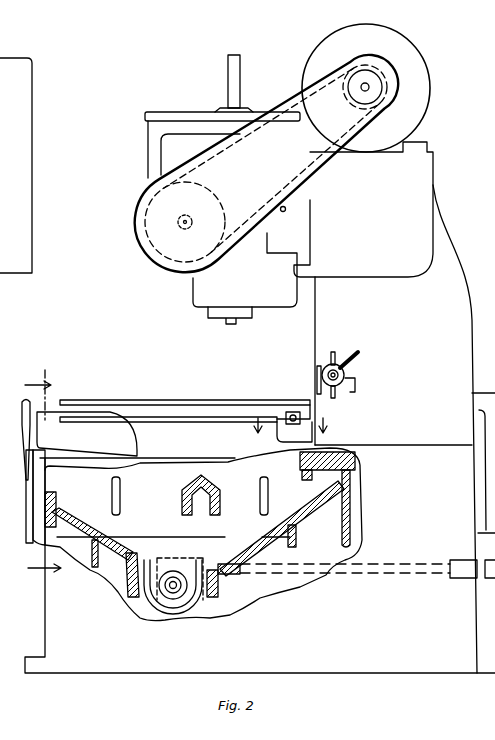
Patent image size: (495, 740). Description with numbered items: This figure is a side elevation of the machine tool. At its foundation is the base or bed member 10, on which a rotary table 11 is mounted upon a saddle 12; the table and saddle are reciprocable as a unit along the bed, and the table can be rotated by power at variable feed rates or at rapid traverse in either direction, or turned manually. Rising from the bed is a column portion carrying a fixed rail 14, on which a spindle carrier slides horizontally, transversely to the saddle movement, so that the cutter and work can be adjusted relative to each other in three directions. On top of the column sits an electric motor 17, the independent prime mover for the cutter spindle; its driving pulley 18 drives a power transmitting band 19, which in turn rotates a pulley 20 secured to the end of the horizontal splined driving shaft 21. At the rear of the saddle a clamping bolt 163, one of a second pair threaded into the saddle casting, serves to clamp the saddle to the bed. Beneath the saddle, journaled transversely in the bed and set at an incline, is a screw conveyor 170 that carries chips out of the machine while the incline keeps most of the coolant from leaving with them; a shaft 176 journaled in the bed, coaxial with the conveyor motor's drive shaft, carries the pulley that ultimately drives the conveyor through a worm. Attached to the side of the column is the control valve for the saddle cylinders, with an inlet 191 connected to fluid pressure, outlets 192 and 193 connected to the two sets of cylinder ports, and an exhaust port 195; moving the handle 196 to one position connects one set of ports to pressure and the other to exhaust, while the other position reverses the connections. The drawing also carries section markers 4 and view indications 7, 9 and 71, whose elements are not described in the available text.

The section line 4- 4 is at (35, 473).
The support plate 7 is at (37, 524).
The guide plate 9 is at (30, 512).
The base or bed member 10 is at (260, 559).
The rotary table 11 is at (166, 386).
The saddle 12 is at (457, 292).
The fixed rail 14 is at (291, 435).
The electric motor 17 is at (404, 42).
The driving pulley 18 is at (372, 87).
The power transmitting band 19 is at (297, 103).
The pulley 20 is at (160, 213).
The horizontal splined driving shaft 21 is at (180, 227).
The work holding fixture 71 is at (42, 433).
The clamping bolt 163 is at (292, 416).
The screw conveyor 170 is at (178, 598).
The shaft 176 is at (168, 594).
The inlet 191 is at (322, 372).
The outlet 192 is at (336, 354).
The outlet 193 is at (337, 396).
The exhaust port 195 is at (356, 380).
The handle 196 is at (358, 353).